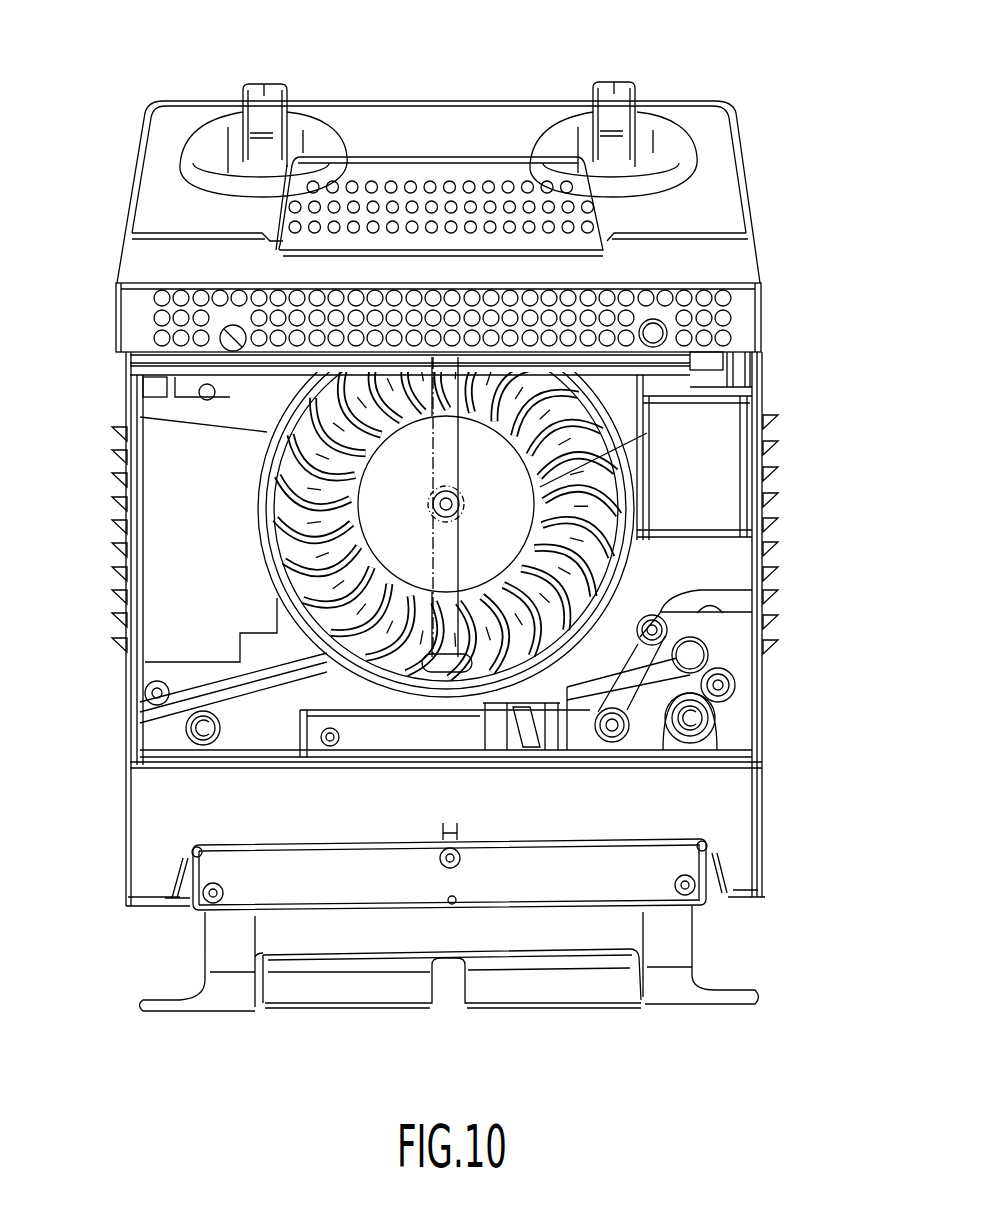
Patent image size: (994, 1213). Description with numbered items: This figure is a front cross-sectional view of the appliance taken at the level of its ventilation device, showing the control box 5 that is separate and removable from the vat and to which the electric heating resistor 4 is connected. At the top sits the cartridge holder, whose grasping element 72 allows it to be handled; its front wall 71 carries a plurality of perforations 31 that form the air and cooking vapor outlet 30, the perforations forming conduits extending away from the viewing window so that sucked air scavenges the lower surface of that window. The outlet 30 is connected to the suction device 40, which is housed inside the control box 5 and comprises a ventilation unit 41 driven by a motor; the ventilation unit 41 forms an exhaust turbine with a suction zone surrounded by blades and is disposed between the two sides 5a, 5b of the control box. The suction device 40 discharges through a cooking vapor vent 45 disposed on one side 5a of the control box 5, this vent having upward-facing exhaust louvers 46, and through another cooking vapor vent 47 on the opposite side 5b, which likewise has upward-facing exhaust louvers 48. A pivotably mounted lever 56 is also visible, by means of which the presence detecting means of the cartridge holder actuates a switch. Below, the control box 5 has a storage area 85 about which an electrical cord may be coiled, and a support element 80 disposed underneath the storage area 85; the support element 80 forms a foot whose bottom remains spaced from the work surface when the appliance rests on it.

The control box 5 is at (703, 117).
The grasping element 72 is at (498, 157).
The air and cooking vapor outlet 30 is at (660, 294).
The electric heating resistor 4 is at (657, 333).
The front wall 71 is at (743, 311).
The perforations 31 is at (197, 293).
The suction device 40 is at (432, 419).
The ventilation unit 41 is at (505, 502).
The upward-facing exhaust louvers 48 is at (768, 418).
The upward-facing exhaust louvers 46 is at (112, 473).
The cooking vapor vent 45 is at (112, 525).
The cooking vapor vent 47 is at (772, 533).
The pivotably mounted lever 56 is at (752, 590).
The side of control box 5a is at (127, 698).
The opposite side of control box 5b is at (766, 690).
The storage area 85 is at (688, 947).
The support element 80 is at (570, 1008).